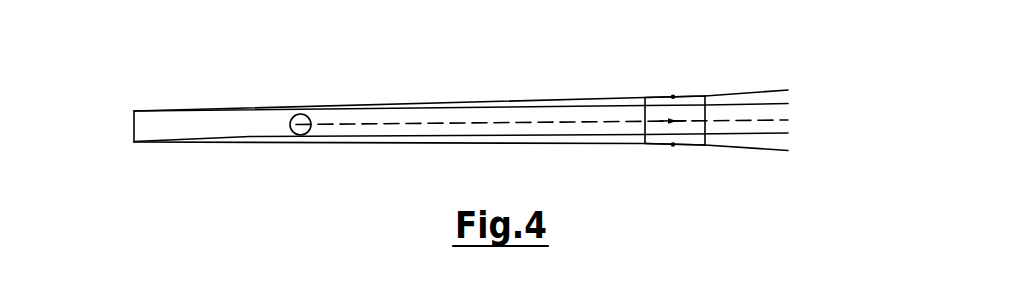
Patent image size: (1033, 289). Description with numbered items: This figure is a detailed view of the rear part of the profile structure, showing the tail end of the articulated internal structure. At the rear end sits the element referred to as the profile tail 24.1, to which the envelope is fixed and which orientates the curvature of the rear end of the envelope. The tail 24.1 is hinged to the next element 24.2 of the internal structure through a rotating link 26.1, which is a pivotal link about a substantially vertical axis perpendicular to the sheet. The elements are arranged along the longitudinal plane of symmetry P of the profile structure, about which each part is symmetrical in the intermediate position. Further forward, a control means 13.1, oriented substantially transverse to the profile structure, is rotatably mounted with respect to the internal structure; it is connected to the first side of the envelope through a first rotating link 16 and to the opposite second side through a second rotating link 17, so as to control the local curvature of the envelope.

The profile tail 24.1 is at (177, 122).
The element of the internal structure 24.2 is at (447, 113).
The control means 13.1 is at (645, 98).
The second rotating link 17 is at (673, 96).
The first rotating link 16 is at (673, 145).
The rotating link 26.1 is at (304, 135).
The longitudinal plane of symmetry P is at (357, 122).